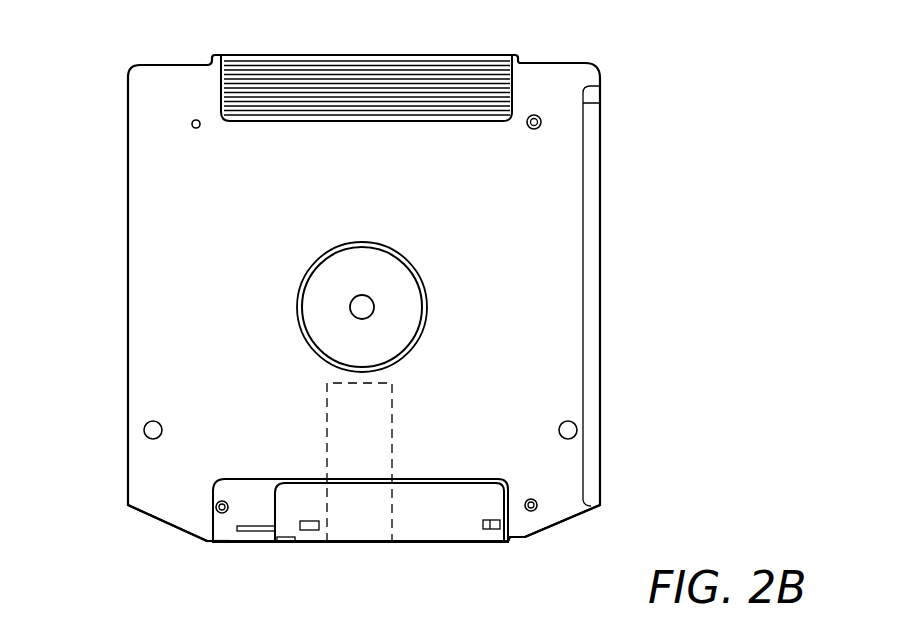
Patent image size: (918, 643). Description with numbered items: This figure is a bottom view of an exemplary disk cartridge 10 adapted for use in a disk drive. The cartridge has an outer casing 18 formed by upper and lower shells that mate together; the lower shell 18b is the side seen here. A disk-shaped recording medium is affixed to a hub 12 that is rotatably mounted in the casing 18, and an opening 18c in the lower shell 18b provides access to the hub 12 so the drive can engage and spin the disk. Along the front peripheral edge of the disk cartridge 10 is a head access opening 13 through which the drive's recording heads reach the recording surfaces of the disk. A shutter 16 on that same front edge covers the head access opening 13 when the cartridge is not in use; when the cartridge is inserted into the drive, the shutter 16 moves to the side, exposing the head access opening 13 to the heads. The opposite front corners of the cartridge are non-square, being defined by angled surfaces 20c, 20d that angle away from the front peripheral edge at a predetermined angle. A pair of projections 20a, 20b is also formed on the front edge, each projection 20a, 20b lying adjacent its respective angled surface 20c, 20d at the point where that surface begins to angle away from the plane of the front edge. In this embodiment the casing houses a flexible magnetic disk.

The disk cartridge 10 is at (66, 111).
The hub 12 is at (351, 246).
The head access opening 13 is at (358, 552).
The shutter 16 is at (452, 512).
The outer casing 18 is at (128, 310).
The lower shell 18b is at (563, 78).
The opening 18c is at (427, 305).
The projection 20a is at (207, 545).
The projection 20b is at (523, 540).
The angled surface 20c is at (165, 525).
The angled surface 20d is at (567, 523).